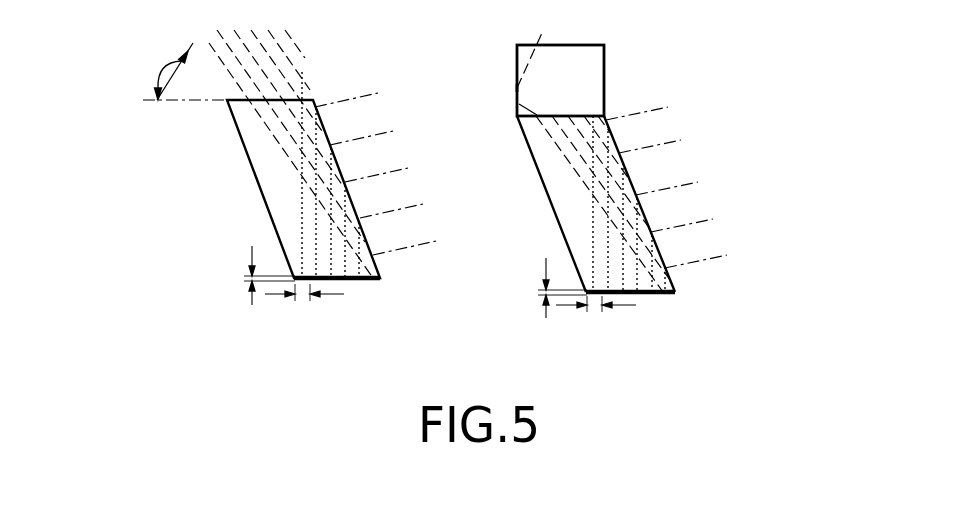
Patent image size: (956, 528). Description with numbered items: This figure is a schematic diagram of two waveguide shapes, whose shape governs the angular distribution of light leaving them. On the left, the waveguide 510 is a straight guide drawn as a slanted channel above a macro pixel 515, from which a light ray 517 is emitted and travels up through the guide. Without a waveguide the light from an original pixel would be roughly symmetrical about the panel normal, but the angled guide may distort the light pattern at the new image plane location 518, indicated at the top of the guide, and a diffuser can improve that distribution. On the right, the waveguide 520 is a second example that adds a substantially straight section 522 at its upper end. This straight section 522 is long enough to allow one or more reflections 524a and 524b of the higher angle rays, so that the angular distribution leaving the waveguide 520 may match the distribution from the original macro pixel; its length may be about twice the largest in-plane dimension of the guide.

The waveguide 510 is at (246, 204).
The macro pixel 515 is at (313, 331).
The light ray 517 is at (301, 205).
The new image plane location 518 is at (143, 100).
The waveguide 520 is at (626, 208).
The substantially straight section 522 is at (605, 67).
The reflection 524a is at (516, 103).
The reflection 524b is at (518, 88).